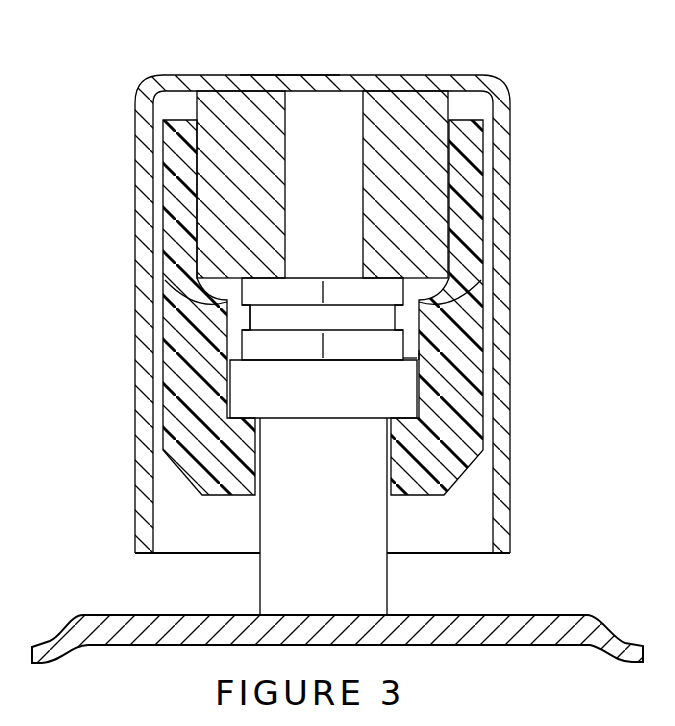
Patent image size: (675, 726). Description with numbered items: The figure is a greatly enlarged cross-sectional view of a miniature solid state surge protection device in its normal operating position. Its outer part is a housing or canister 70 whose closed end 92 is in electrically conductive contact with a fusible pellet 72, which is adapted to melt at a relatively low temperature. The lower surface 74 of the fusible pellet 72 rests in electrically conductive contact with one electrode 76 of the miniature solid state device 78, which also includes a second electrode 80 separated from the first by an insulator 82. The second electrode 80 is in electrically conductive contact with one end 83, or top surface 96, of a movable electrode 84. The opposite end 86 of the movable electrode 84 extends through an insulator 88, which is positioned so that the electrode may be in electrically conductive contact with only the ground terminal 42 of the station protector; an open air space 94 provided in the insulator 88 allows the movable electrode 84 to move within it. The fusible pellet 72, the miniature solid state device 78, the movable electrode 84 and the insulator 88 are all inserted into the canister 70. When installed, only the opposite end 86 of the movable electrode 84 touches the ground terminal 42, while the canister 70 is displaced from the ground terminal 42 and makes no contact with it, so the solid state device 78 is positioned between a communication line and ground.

The housing or canister 70 is at (506, 98).
The closed end of the canister 92 is at (286, 77).
The fusible pellet 72 is at (424, 122).
The insulator 88 is at (477, 160).
The lower surface of the fusible pellet 74 is at (228, 304).
The first electrode of the miniature solid state device 76 is at (403, 318).
The miniature solid state device 78 is at (398, 302).
The second electrode of the miniature solid state device 80 is at (403, 344).
The insulator of the miniature solid state device 82 is at (257, 316).
The one end of the movable electrode 83 is at (242, 388).
The top surface of the movable electrode 96 is at (412, 360).
The open air space 94 is at (420, 356).
The movable electrode 84 is at (375, 520).
The opposite end of the movable electrode 86 is at (355, 615).
The ground terminal 42 is at (527, 622).